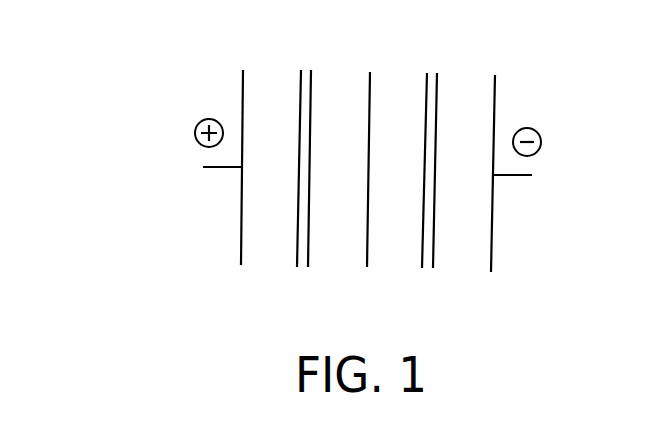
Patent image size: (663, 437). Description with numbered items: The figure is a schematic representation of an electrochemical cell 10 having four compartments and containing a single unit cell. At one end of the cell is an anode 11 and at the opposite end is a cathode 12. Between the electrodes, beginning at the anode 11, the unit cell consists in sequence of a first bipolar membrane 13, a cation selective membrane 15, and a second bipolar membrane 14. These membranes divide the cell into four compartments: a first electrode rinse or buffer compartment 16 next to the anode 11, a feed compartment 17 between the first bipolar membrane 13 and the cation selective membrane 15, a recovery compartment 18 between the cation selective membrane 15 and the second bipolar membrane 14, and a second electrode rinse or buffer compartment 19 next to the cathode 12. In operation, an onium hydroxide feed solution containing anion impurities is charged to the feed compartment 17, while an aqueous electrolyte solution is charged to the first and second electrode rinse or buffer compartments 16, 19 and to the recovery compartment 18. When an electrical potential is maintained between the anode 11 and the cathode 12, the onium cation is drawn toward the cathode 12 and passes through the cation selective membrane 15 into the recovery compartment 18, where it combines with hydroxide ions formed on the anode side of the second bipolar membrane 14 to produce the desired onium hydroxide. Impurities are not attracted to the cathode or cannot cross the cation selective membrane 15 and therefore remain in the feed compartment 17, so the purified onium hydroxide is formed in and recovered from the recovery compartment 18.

The electrochemical cell 10 is at (187, 80).
The anode 11 is at (226, 151).
The cathode 12 is at (513, 155).
The first bipolar membrane 13 is at (302, 173).
The second bipolar membrane 14 is at (428, 173).
The cation selective membrane 15 is at (370, 173).
The first electrode rinse or buffer compartment 16 is at (271, 167).
The feed compartment 17 is at (339, 167).
The recovery compartment 18 is at (397, 167).
The second electrode rinse or buffer compartment 19 is at (464, 167).